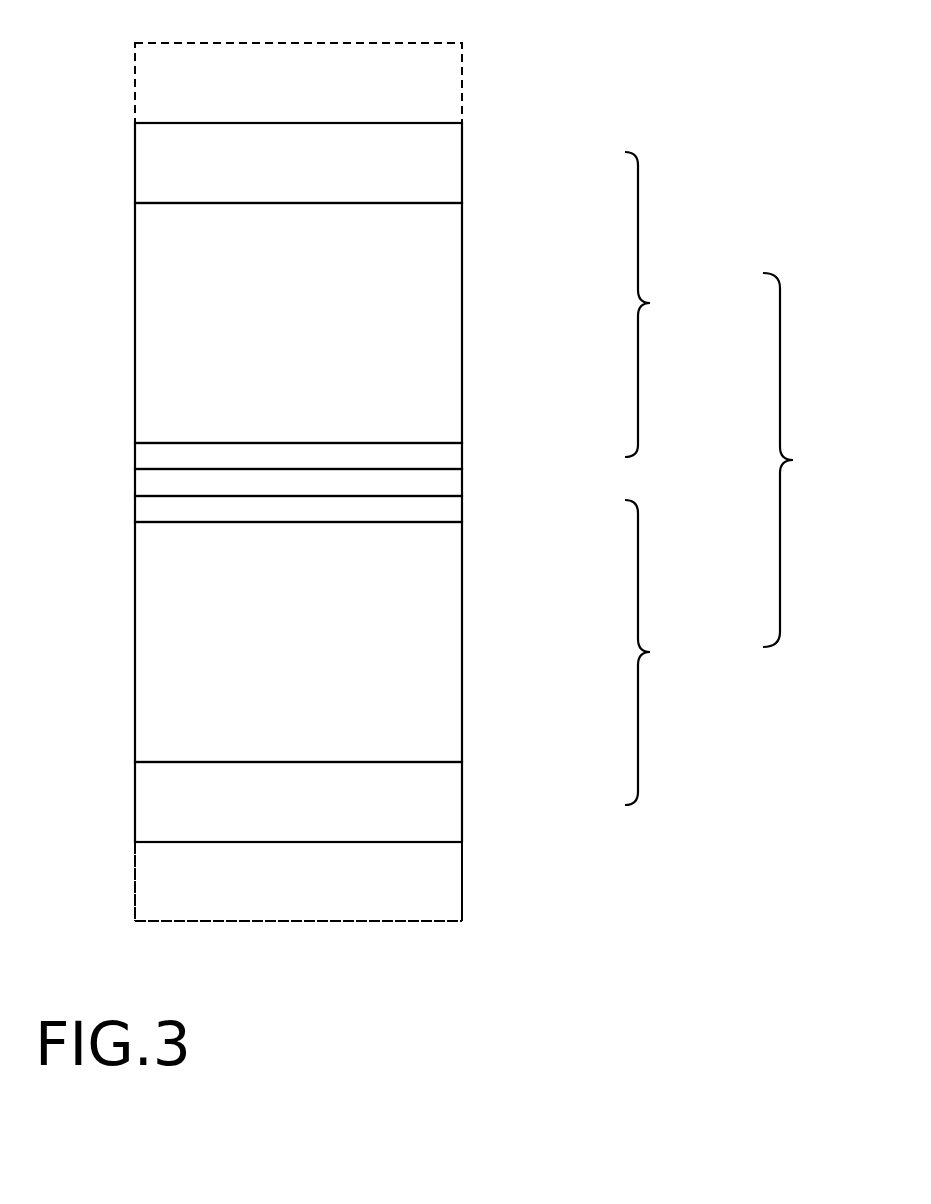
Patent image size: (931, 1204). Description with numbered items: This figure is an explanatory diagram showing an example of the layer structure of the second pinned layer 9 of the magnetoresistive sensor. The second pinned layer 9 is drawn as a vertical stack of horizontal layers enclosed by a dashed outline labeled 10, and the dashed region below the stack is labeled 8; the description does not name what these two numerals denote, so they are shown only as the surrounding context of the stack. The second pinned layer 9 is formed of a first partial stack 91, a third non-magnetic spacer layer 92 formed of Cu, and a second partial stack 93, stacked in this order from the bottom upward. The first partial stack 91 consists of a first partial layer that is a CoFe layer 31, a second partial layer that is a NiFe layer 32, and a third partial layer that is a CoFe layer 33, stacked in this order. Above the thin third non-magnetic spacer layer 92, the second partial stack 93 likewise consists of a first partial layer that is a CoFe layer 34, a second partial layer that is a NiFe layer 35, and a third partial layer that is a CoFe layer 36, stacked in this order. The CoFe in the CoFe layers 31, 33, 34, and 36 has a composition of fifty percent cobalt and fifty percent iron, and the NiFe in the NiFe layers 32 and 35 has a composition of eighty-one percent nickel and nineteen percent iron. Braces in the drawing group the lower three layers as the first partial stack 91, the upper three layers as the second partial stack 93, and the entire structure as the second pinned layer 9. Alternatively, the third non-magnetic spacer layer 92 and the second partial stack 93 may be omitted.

The semiconductor light emitting device 10 is at (443, 82).
The substrate 8 is at (443, 881).
The second pinned layer 9 is at (795, 460).
The first partial stack 91 is at (674, 652).
The second partial stack 93 is at (674, 304).
The third non-magnetic spacer layer 92 is at (443, 483).
The CoFe layer 31 is at (443, 801).
The NiFe layer 32 is at (443, 637).
The CoFe layer 33 is at (443, 511).
The CoFe layer 34 is at (443, 452).
The NiFe layer 35 is at (443, 294).
The CoFe layer 36 is at (443, 171).